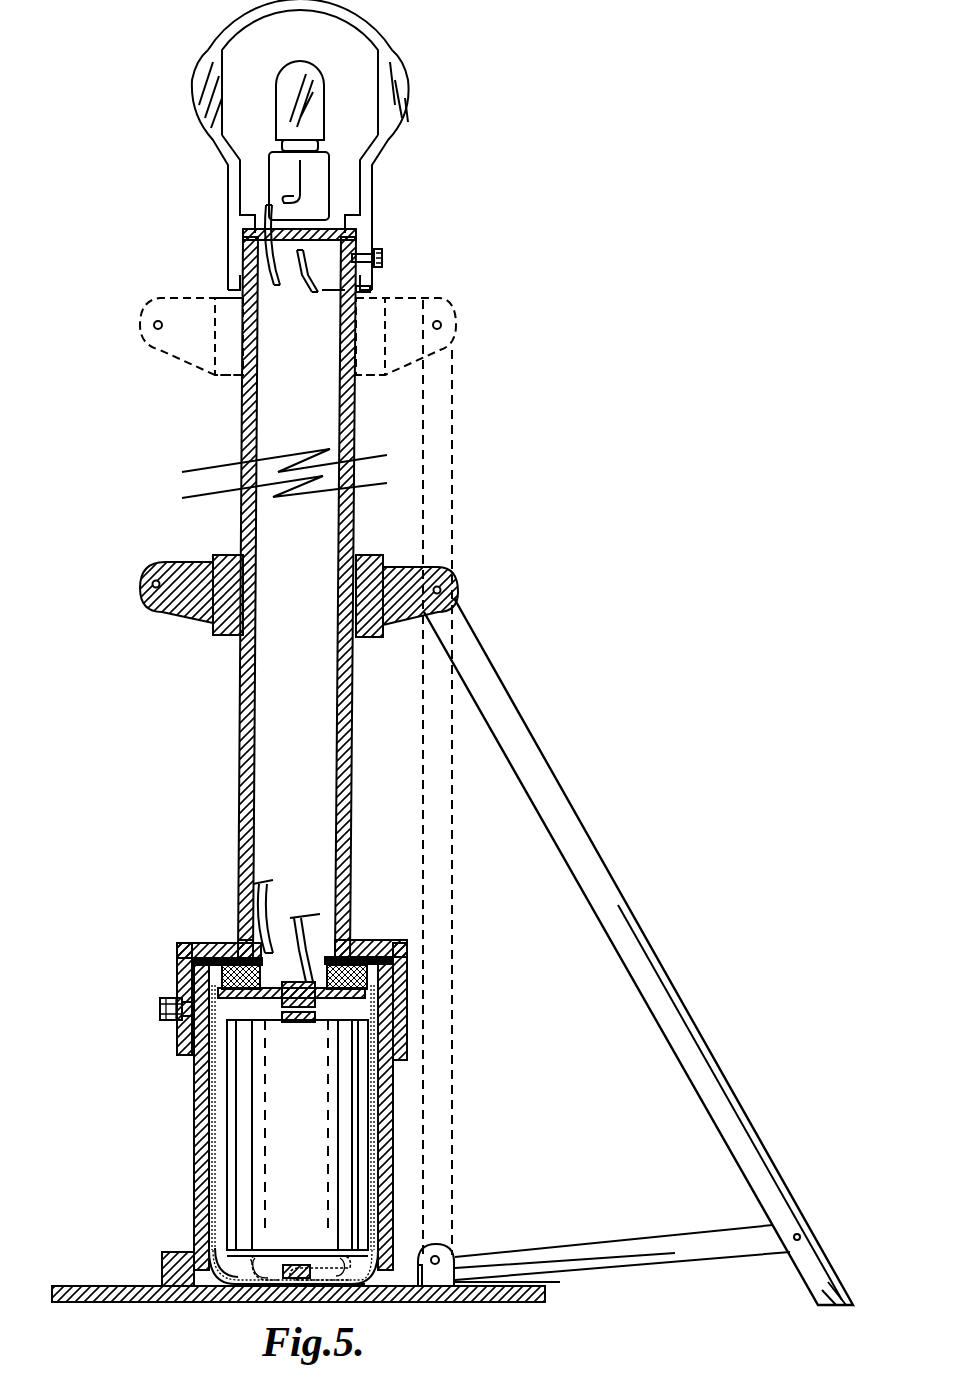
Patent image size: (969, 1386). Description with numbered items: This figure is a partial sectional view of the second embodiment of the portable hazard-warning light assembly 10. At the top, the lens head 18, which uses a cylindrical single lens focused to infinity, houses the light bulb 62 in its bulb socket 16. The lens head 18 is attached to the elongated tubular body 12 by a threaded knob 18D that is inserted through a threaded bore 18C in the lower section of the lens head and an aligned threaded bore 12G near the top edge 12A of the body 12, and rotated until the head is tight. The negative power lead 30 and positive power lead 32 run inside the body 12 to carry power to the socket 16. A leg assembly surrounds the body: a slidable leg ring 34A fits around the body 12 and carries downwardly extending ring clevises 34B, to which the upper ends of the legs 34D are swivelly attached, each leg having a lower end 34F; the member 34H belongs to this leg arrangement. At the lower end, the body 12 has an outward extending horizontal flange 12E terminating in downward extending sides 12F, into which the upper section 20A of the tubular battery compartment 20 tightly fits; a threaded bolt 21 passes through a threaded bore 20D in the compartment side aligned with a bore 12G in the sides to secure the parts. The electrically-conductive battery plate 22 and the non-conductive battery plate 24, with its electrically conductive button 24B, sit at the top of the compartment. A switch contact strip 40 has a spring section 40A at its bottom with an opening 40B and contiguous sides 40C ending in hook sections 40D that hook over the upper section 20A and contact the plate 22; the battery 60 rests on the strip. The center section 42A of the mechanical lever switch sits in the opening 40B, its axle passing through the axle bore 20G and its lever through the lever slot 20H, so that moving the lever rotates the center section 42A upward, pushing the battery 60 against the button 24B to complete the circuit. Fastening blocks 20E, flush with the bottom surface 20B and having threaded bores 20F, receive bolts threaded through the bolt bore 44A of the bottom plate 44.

The portable hazard-warning light assembly 10 is at (508, 73).
The elongated tubular body 12 is at (357, 400).
The top edge 12A is at (272, 233).
The horizontal flange 12E is at (412, 906).
The downward extending sides 12F is at (406, 1024).
The threaded bore 12G is at (368, 286).
The bulb socket 16 is at (314, 172).
The lens head 18 is at (396, 80).
The threaded bore 18C is at (366, 240).
The threaded knob 18D is at (384, 256).
The battery compartment 20 is at (400, 1076).
The upper section 20A is at (408, 978).
The bottom surface 20B is at (560, 1286).
The threaded bore 20D is at (176, 1004).
The fastening block 20E is at (170, 1252).
The threaded bore 20F is at (166, 1268).
The axle bore 20G is at (301, 1240).
The lever slot 20H is at (435, 1260).
The threaded bolt 21 is at (176, 1010).
The electrically-conductive battery plate 22 is at (402, 946).
The non-conductive battery plate 24 is at (330, 1010).
The electrically conductive button 24B is at (300, 1024).
The negative power lead 30 is at (282, 263).
The positive power lead 32 is at (312, 295).
The slidable leg ring 34A is at (378, 566).
The ring clevis 34B is at (182, 566).
The leg 34D is at (572, 840).
The lower end 34F is at (826, 1292).
The strut 34H is at (686, 1242).
The switch contact strip 40 is at (388, 1110).
The spring section 40A is at (300, 1250).
The opening 40B is at (398, 1256).
The contiguous sides 40C is at (212, 1130).
The hook section 40D is at (362, 972).
The center section 42A is at (260, 1250).
The bottom plate 44 is at (66, 1284).
The bolt bore 44A is at (178, 1300).
The battery 60 is at (310, 1160).
The light bulb 62 is at (298, 86).